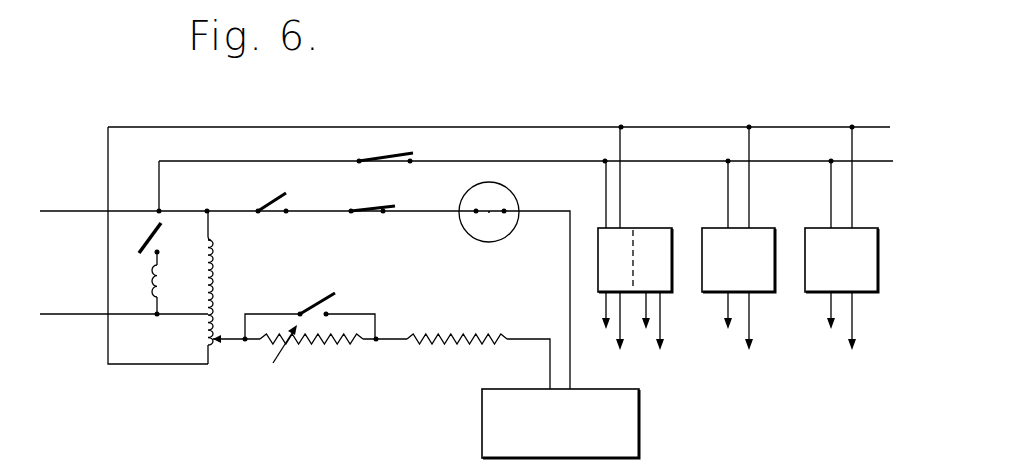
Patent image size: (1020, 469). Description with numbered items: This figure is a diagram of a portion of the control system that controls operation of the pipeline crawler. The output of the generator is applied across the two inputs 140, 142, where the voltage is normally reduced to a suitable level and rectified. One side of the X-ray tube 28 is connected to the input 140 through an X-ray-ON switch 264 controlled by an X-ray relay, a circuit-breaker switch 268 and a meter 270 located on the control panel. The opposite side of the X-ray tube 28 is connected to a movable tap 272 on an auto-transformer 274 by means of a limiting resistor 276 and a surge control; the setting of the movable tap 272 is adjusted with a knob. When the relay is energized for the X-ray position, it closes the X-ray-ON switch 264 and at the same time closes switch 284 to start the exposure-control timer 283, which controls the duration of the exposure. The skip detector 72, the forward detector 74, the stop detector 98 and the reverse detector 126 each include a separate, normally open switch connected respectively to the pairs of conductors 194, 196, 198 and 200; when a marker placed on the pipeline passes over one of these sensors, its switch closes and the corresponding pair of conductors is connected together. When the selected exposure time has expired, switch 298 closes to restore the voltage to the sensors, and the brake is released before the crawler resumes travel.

The X-ray tube 28 is at (483, 411).
The skip detector 72 is at (602, 250).
The forward detector 74 is at (652, 231).
The stop detector 98 is at (764, 233).
The reverse detector 126 is at (867, 233).
The input 140 is at (58, 208).
The input 142 is at (65, 318).
The pair of conductors 194 is at (612, 335).
The pair of conductors 196 is at (653, 342).
The pair of conductors 198 is at (735, 332).
The pair of conductors 200 is at (840, 338).
The X-ray-ON switch 264 is at (270, 205).
The circuit-breaker switch 268 is at (367, 207).
The meter 270 is at (472, 223).
The movable tap 272 is at (222, 337).
The auto-transformer 274 is at (186, 329).
The limiting resistor 276 is at (437, 333).
The exposure-control timer 283 is at (152, 280).
The switch 284 is at (137, 246).
The switch 298 is at (395, 152).